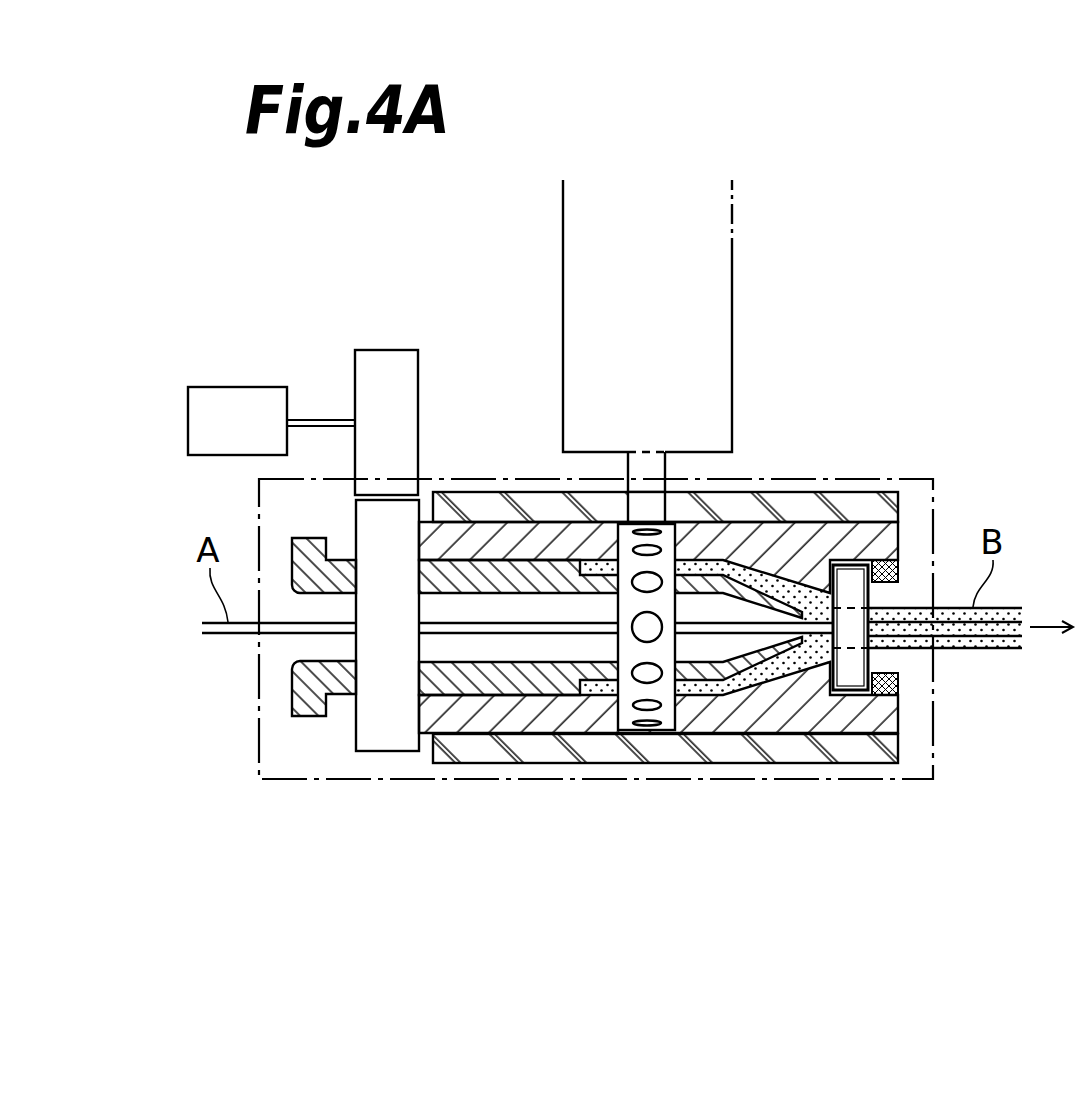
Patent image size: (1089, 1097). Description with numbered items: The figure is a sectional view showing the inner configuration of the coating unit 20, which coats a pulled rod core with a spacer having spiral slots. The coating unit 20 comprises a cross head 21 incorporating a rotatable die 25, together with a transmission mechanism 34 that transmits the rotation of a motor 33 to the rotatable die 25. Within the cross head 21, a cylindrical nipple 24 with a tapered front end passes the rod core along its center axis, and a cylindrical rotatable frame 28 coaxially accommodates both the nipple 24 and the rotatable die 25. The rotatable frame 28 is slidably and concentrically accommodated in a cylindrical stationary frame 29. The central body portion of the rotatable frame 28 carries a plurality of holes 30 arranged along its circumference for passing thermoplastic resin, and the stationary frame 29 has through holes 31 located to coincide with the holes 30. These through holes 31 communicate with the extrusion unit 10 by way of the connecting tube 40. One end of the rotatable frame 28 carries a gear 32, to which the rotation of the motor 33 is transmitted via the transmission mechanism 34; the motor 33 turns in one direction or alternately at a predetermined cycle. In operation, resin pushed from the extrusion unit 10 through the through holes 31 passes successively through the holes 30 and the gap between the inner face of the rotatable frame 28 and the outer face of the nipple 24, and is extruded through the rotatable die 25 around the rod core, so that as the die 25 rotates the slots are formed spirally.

The extrusion unit 10 is at (733, 260).
The coating unit 20 is at (644, 533).
The cross head 21 is at (848, 478).
The cylindrical nipple 24 is at (292, 684).
The rotatable die 25 is at (848, 682).
The cylindrical rotatable frame 28 is at (725, 722).
The cylindrical stationary frame 29 is at (510, 752).
The holes 30 is at (637, 641).
The through holes 31 is at (655, 503).
The gear 32 is at (378, 752).
The motor 33 is at (253, 387).
The transmission mechanism 34 is at (405, 350).
The connecting tube 40 is at (638, 465).